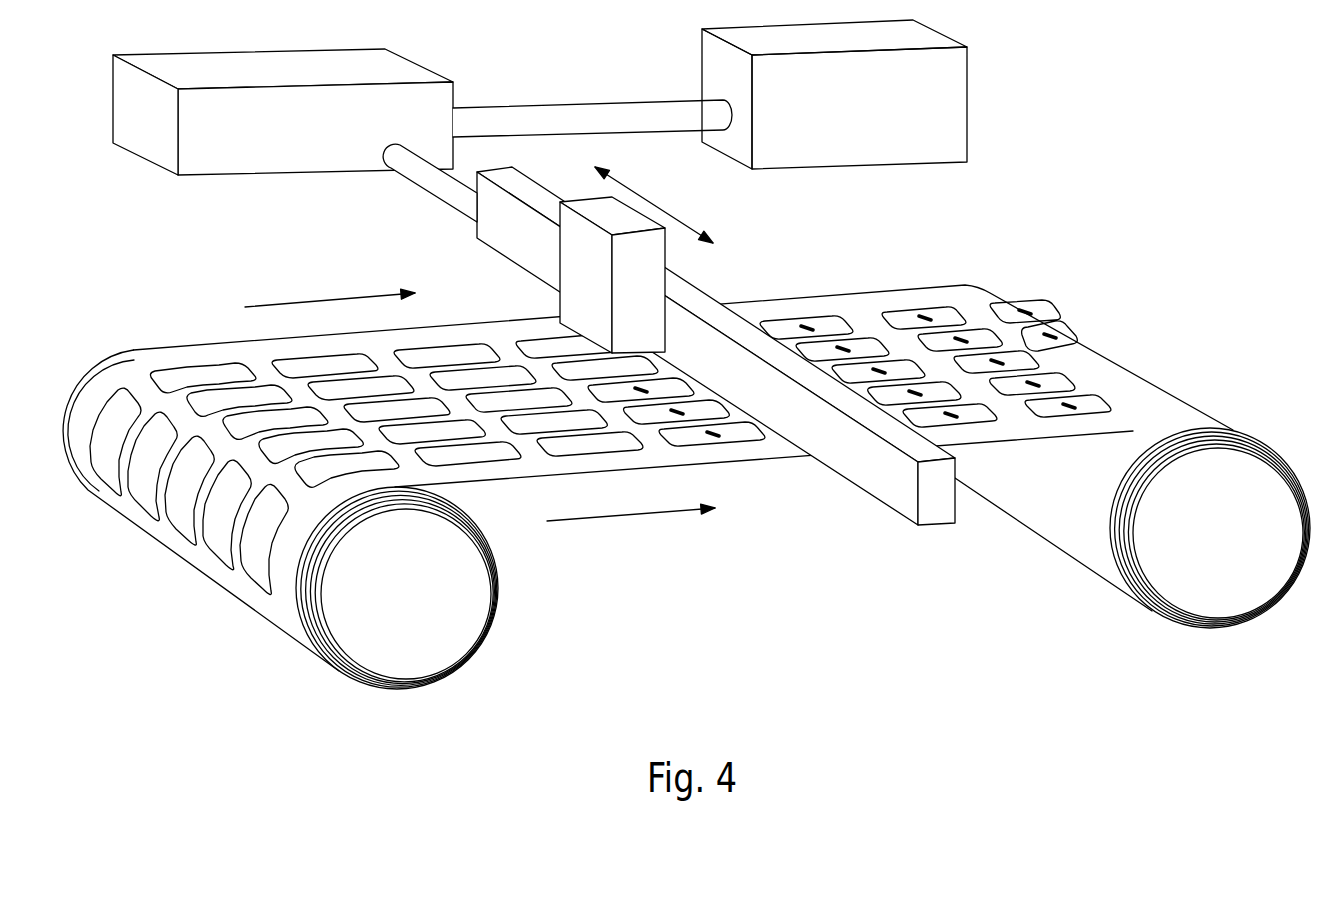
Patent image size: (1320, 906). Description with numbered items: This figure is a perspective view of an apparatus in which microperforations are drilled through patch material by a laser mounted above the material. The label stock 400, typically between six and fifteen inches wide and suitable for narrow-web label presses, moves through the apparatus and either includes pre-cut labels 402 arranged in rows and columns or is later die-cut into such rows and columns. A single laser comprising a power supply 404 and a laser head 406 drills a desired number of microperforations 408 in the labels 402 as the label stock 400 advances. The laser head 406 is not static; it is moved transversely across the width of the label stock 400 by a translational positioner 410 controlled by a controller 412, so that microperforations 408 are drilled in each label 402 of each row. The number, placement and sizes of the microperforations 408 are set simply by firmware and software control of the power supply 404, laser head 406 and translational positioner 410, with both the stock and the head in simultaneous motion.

The label stock 400 is at (882, 297).
The pre-cut labels 402 is at (840, 313).
The power supply 404 is at (343, 147).
The laser head 406 is at (567, 296).
The microperforations 408 is at (815, 332).
The translational positioner 410 is at (700, 374).
The controller 412 is at (838, 131).